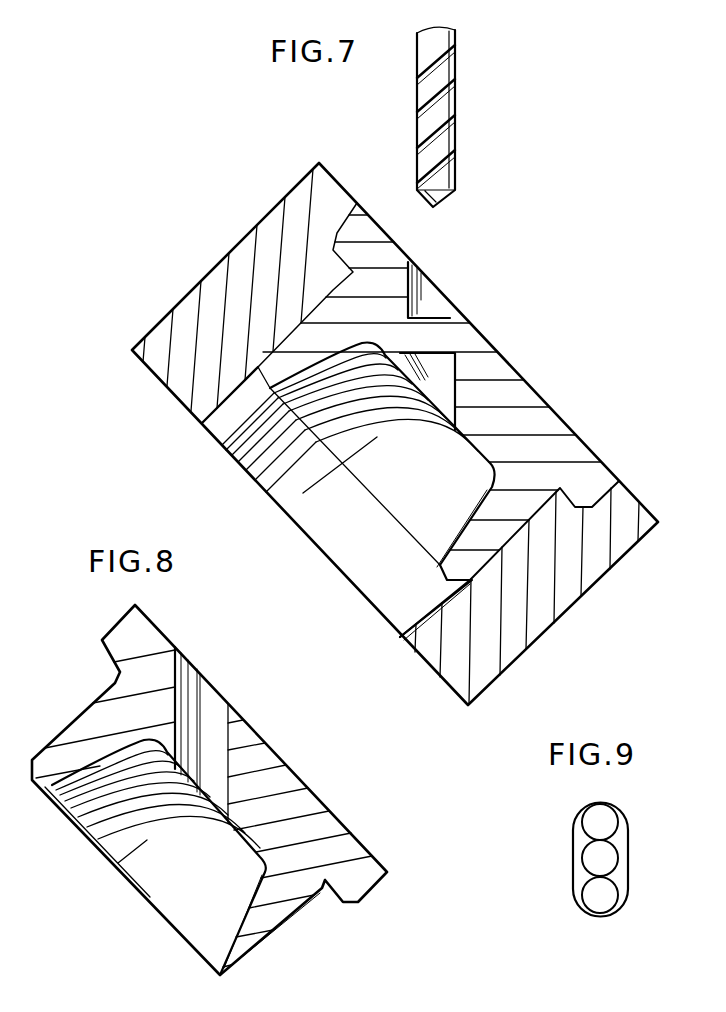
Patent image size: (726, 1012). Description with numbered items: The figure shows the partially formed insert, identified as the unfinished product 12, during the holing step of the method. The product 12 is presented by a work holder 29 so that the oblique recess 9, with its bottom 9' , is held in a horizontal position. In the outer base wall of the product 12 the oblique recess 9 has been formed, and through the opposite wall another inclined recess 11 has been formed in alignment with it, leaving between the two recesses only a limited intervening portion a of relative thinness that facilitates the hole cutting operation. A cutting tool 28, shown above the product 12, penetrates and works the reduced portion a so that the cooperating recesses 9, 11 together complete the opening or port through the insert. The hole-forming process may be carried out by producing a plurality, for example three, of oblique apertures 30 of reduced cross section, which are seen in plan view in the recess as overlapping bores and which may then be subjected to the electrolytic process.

In FIG. 7, the cutting tool 28 is at (448, 110).
In FIG. 7, the unfinished product 12 is at (528, 423).
In FIG. 8, the unfinished product 12 is at (297, 797).
In FIG. 7, the oblique recess 9 is at (429, 278).
In FIG. 8, the oblique recess 9 is at (198, 706).
In FIG. 9, the oblique recess 9 is at (619, 860).
In FIG. 7, the bottom of the oblique recess 9' is at (446, 334).
In FIG. 7, the intervening portion a is at (430, 338).
In FIG. 7, the inclined recess 11 is at (447, 395).
In FIG. 8, the inclined recess 11 is at (207, 790).
In FIG. 7, the work holder 29 is at (622, 535).
In FIG. 8, the oblique apertures 30 is at (210, 740).
In FIG. 9, the oblique apertures 30 is at (610, 887).